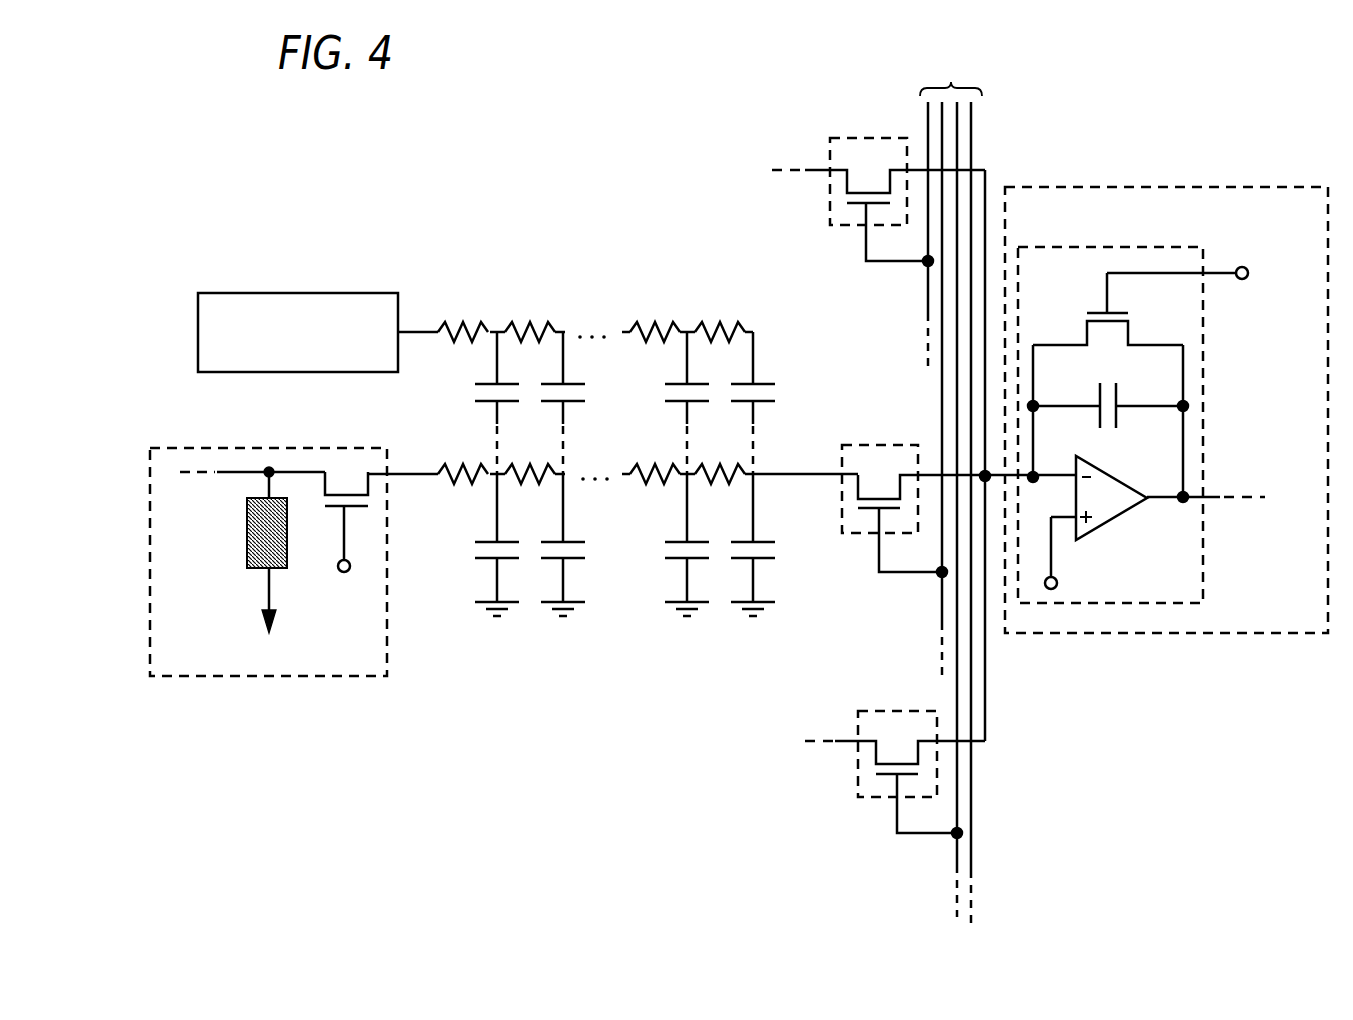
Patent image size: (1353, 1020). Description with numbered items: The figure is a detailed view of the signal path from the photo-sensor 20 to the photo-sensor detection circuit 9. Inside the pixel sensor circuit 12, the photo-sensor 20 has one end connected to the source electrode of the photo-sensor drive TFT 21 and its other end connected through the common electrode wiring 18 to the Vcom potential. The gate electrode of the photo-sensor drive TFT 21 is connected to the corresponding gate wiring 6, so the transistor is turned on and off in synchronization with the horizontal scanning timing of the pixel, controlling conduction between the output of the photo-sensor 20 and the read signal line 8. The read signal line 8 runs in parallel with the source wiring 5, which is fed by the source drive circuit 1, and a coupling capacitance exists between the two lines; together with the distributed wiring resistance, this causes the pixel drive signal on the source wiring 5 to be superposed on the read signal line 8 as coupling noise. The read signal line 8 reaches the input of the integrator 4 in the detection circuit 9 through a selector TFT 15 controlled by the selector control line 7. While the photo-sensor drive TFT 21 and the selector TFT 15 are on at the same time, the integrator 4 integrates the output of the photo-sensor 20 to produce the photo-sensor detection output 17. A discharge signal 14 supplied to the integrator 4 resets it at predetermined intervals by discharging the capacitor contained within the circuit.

The source drive circuit 1 is at (300, 292).
The integrator 4 is at (1148, 398).
The source wiring 5 is at (600, 332).
The gate wiring 6 is at (352, 566).
The selector control line 7 is at (952, 490).
The read signal line 8 is at (603, 482).
The photo-sensor detection circuit 9 is at (1060, 187).
The pixel sensor circuit 12 is at (285, 572).
The discharge signal 14 is at (1243, 267).
The selector TFT 15 is at (850, 228).
The photo-sensor detection output 17 is at (1225, 497).
The common electrode wiring 18 is at (272, 578).
The photo-sensor 20 is at (247, 532).
The photo-sensor drive TFT 21 is at (347, 472).